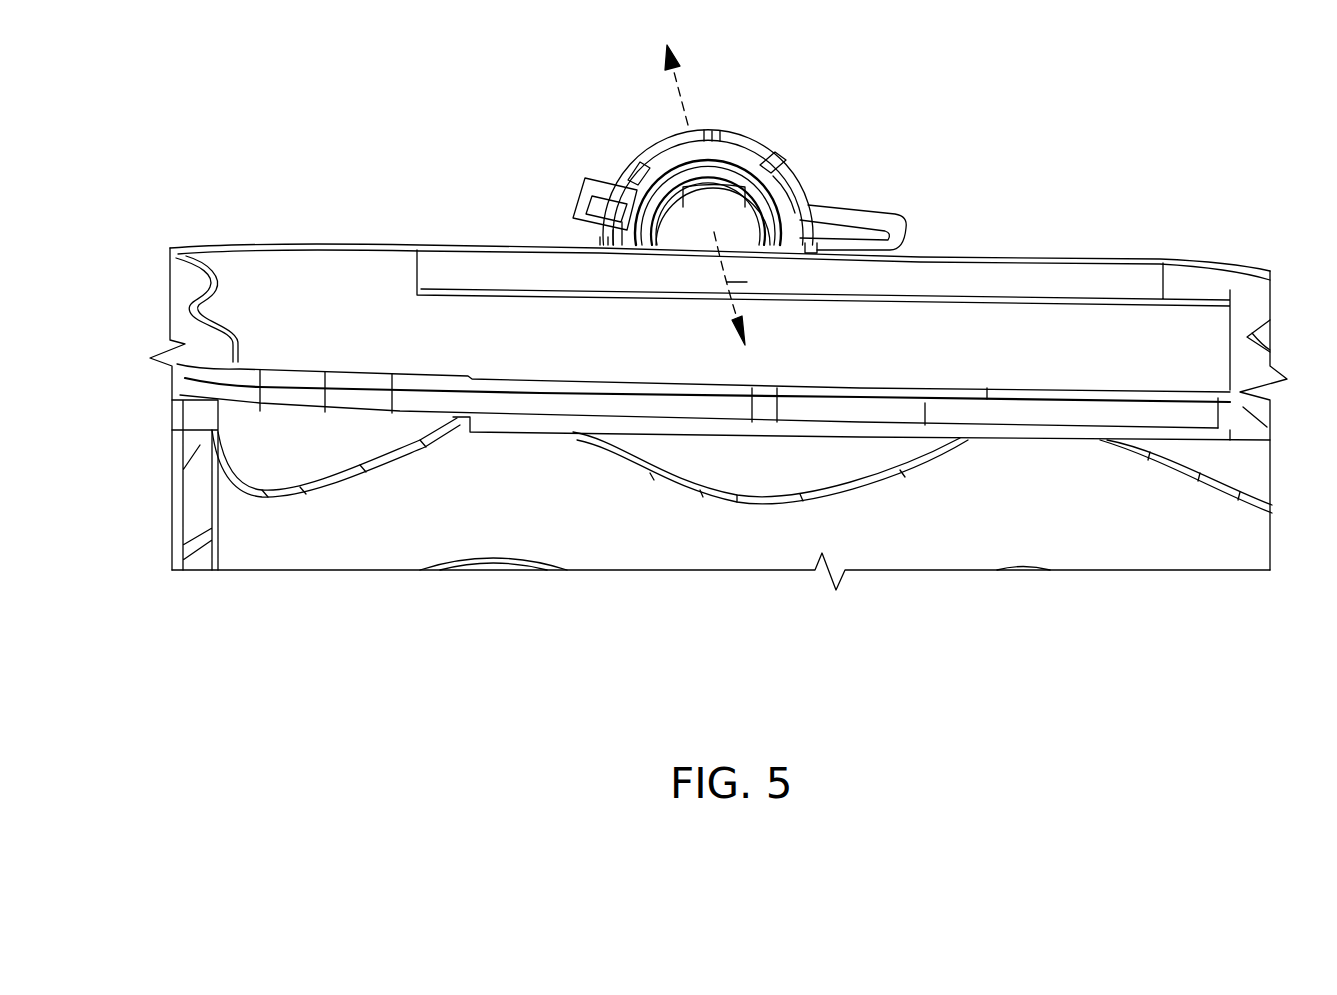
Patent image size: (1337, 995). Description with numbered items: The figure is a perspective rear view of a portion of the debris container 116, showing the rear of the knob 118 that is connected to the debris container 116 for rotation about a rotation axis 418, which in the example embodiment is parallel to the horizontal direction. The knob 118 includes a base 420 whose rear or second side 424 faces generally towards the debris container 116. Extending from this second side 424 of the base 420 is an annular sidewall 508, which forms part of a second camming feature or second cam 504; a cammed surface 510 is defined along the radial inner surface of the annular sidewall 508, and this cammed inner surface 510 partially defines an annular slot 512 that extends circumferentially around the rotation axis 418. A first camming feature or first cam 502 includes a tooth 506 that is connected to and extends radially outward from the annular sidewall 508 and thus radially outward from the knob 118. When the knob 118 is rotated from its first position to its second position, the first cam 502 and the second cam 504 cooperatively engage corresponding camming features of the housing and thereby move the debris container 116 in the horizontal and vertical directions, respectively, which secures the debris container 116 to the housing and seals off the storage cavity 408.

The debris container 116 is at (305, 240).
The knob 118 is at (815, 190).
The storage cavity 408 is at (1047, 318).
The rotation axis 418 is at (762, 292).
The base 420 is at (710, 128).
The second side 424 is at (645, 170).
The first cam 502 is at (666, 205).
The second cam 504 is at (763, 157).
The tooth 506 is at (590, 212).
The annular sidewall 508 is at (728, 162).
The cammed surface 510 is at (800, 180).
The annular slot 512 is at (645, 218).